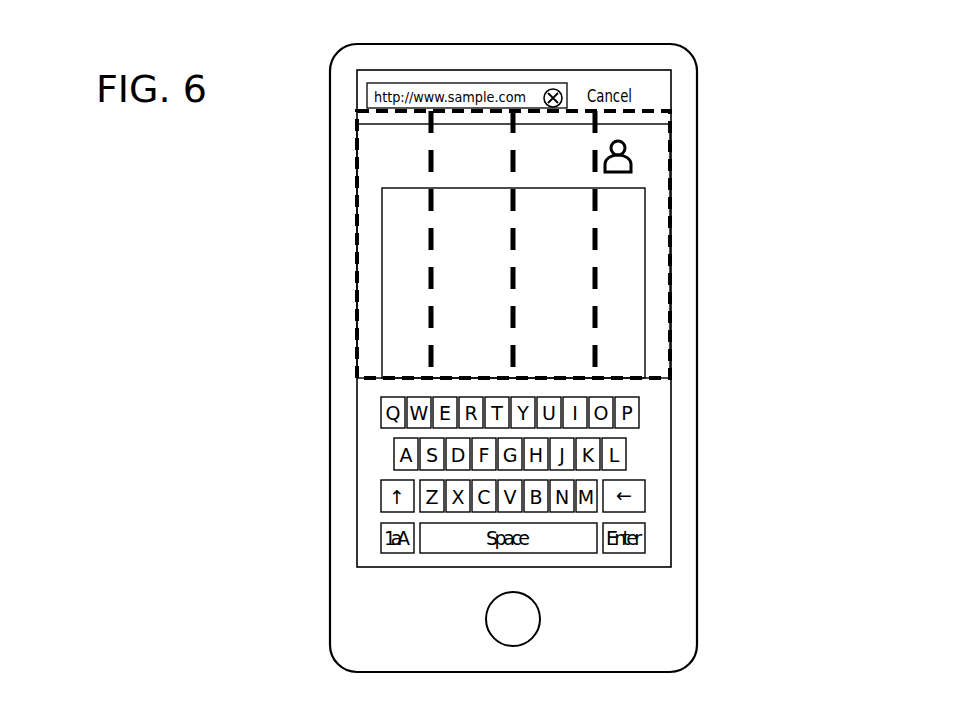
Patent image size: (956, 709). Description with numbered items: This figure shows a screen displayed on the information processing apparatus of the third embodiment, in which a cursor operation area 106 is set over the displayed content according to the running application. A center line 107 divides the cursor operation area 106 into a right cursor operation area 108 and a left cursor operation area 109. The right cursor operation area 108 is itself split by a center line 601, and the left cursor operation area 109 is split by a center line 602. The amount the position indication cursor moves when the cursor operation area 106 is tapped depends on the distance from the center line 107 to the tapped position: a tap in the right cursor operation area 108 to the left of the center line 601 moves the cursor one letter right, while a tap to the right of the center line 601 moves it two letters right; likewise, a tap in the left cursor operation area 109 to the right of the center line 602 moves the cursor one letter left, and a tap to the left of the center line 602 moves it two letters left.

The cursor operation area 106 is at (671, 250).
The center line 107 is at (517, 127).
The right cursor operation area 108 is at (628, 304).
The left cursor operation area 109 is at (383, 298).
The center line of the right cursor operation area 601 is at (597, 208).
The center line of the left cursor operation area 602 is at (425, 196).